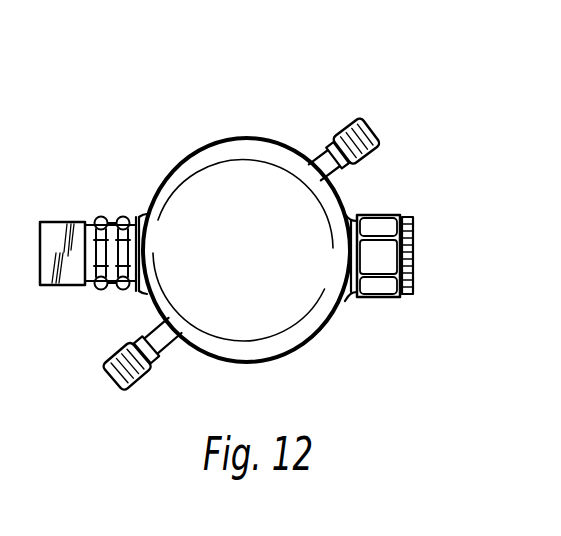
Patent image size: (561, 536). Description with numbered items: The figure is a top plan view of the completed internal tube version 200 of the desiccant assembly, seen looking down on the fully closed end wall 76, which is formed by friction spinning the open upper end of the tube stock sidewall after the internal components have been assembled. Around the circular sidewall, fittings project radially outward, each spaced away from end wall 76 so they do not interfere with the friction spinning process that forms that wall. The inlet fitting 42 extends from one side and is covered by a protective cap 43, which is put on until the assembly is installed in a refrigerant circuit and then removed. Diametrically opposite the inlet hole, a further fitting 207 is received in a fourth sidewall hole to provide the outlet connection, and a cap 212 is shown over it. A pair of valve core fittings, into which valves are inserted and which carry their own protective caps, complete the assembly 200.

The internal tube version 200 is at (211, 137).
The end wall 76 is at (257, 197).
The further fitting 207 is at (125, 217).
The hose cap 212 is at (80, 220).
The inlet fitting 42 is at (385, 210).
The protective cap 43 is at (413, 253).